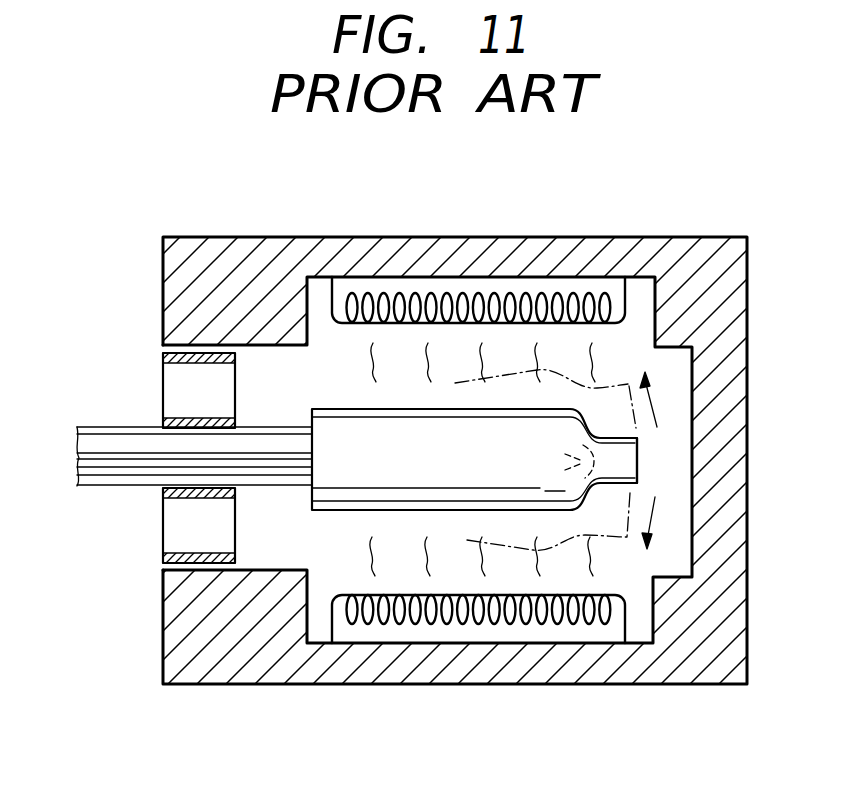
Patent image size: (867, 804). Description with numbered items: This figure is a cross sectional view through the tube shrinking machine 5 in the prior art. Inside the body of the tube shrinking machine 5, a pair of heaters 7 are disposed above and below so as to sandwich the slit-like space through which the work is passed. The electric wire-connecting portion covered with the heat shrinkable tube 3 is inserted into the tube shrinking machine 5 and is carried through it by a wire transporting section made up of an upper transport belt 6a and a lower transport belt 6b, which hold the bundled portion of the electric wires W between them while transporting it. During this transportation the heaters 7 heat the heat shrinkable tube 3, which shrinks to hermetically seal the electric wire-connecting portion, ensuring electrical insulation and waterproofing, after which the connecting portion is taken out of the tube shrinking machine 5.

The tube shrinking machine 5 is at (698, 238).
The heaters 7 is at (507, 293).
The heat shrinkable tube 3 is at (562, 438).
The upper transport belt 6a is at (197, 364).
The lower transport belt 6b is at (190, 498).
The electric wires W is at (103, 435).